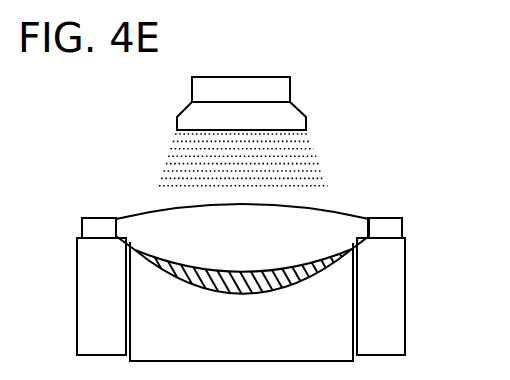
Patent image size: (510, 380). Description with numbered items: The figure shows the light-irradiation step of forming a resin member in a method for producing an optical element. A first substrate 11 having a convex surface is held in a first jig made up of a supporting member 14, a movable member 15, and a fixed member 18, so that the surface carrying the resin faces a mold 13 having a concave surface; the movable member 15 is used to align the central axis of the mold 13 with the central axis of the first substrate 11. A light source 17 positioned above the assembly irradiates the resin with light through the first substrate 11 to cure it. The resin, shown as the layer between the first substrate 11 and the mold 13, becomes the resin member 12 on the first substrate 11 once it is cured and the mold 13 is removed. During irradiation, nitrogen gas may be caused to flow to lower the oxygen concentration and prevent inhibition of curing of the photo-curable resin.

The first substrate 11 is at (325, 223).
The resin member 12 is at (337, 268).
The mold 13 is at (325, 323).
The supporting member 14 is at (98, 280).
The movable member 15 is at (392, 228).
The light source 17 is at (293, 121).
The fixed member 18 is at (92, 222).